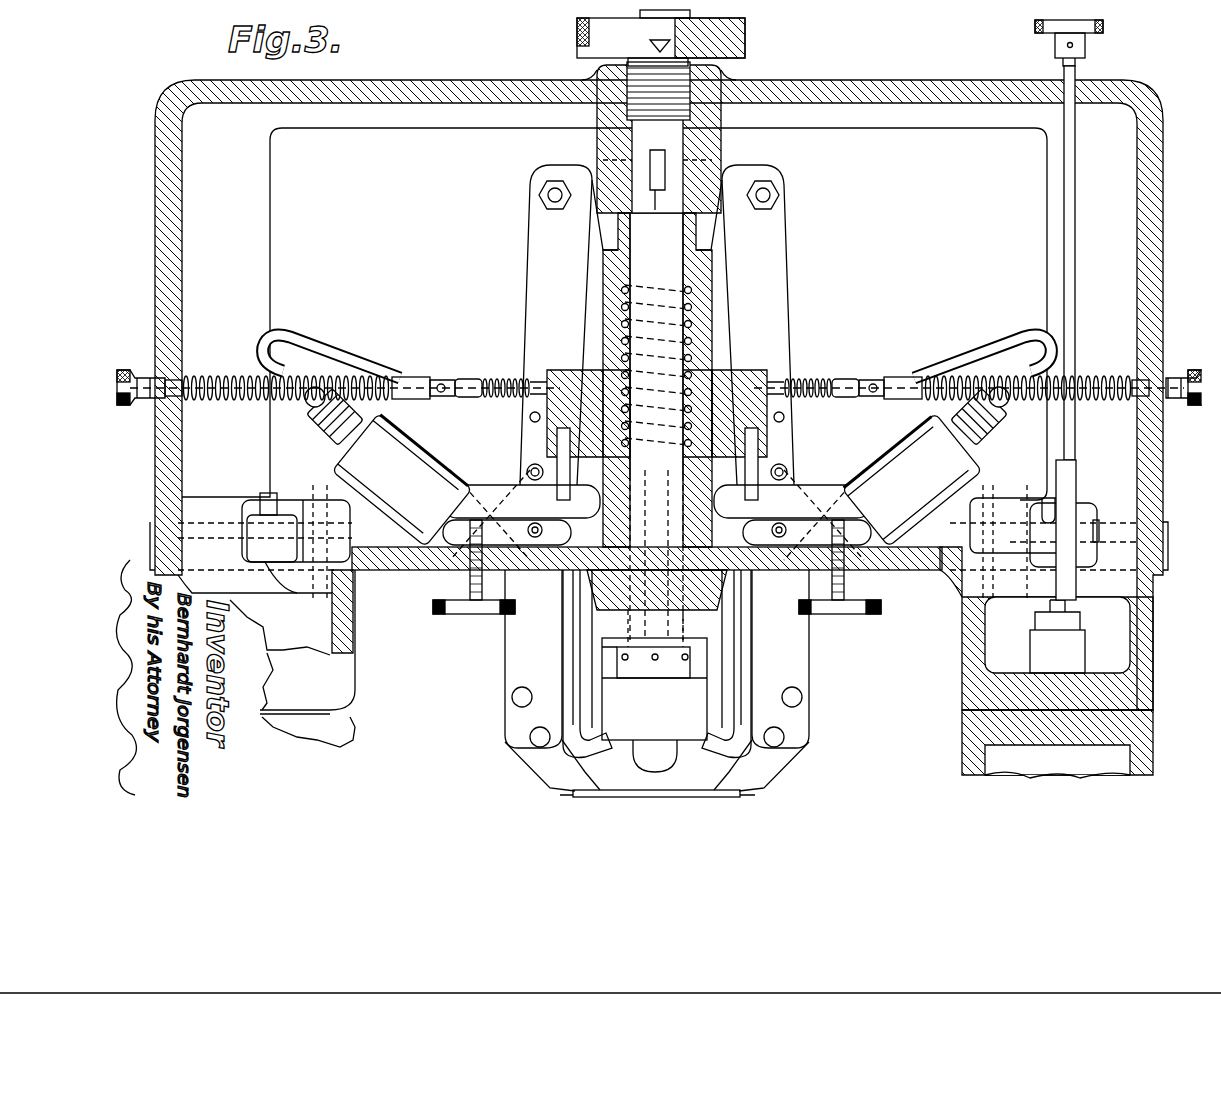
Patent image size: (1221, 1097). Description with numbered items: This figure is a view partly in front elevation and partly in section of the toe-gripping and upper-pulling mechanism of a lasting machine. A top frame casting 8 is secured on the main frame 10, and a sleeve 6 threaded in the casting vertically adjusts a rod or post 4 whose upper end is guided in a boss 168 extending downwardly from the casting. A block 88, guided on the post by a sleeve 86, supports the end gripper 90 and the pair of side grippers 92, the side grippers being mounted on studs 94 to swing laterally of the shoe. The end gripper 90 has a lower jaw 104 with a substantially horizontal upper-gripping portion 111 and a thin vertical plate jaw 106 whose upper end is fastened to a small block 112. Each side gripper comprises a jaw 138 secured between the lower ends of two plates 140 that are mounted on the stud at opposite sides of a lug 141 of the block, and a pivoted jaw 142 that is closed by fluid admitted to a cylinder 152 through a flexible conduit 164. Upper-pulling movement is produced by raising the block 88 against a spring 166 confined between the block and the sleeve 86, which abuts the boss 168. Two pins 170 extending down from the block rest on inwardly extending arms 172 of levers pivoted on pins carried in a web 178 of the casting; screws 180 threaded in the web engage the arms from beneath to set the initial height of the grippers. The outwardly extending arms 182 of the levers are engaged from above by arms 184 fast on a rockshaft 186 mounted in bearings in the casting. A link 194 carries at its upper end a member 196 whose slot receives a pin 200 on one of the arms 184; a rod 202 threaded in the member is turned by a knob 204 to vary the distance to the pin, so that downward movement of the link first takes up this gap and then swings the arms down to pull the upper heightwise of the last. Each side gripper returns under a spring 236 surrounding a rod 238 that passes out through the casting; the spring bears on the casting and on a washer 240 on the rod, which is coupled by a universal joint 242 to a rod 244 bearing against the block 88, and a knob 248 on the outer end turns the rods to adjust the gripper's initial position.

The rod or post 4 is at (666, 270).
The sleeve 6 is at (690, 84).
The top frame casting 8 is at (960, 88).
The main frame 10 is at (1142, 732).
The sleeve 86 is at (612, 262).
The block 88 is at (725, 376).
The end gripper 90 is at (742, 797).
The side grippers 92 is at (497, 720).
The studs 94 is at (540, 194).
The upper-gripping jaw 104 is at (680, 785).
The upper-gripping jaw 106 is at (695, 692).
The upper-gripping portion 111 is at (572, 795).
The small block 112 is at (700, 650).
The jaw 138 is at (525, 762).
The plates 140 is at (560, 645).
The lug 141 is at (588, 234).
The jaw 142 is at (607, 738).
The cylinder 152 is at (355, 450).
The flexible conduit 164 is at (328, 347).
The spring 166 is at (700, 302).
The boss 168 is at (720, 146).
The pins 170 is at (560, 470).
The inwardly extending arms 172 is at (492, 492).
The web 178 is at (772, 572).
The screws 180 is at (462, 614).
The outwardly extending arms 182 is at (306, 528).
The arms 184 is at (265, 492).
The rockshaft 186 is at (203, 523).
The link 194 is at (1080, 660).
The member 196 is at (1078, 470).
The pin 200 is at (245, 525).
The rod 202 is at (1076, 196).
The knob 204 is at (1104, 27).
The return spring 236 is at (234, 398).
The rod 238 is at (212, 376).
The washer 240 is at (400, 377).
The universal joint 242 is at (440, 378).
The rod 244 is at (498, 378).
The knob 248 is at (126, 408).